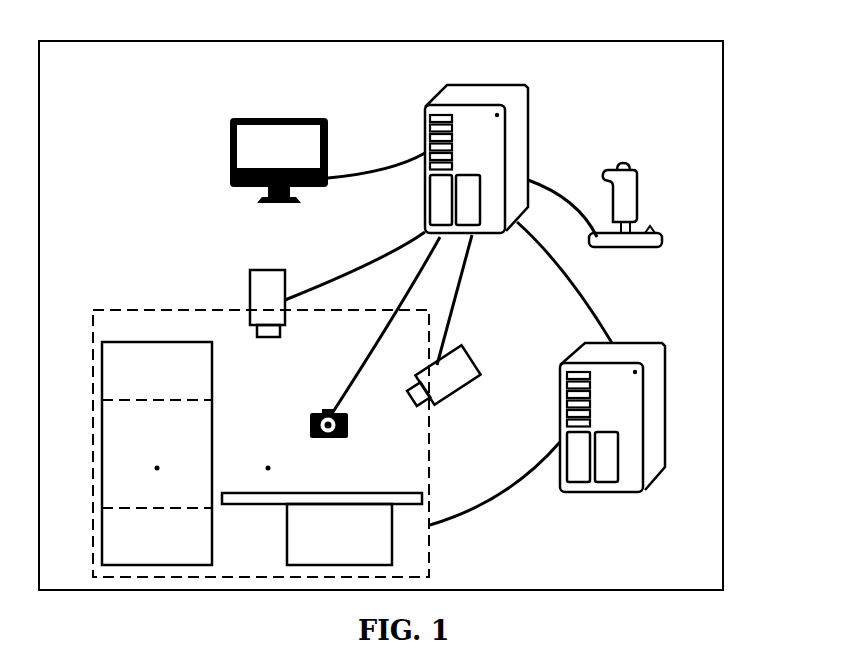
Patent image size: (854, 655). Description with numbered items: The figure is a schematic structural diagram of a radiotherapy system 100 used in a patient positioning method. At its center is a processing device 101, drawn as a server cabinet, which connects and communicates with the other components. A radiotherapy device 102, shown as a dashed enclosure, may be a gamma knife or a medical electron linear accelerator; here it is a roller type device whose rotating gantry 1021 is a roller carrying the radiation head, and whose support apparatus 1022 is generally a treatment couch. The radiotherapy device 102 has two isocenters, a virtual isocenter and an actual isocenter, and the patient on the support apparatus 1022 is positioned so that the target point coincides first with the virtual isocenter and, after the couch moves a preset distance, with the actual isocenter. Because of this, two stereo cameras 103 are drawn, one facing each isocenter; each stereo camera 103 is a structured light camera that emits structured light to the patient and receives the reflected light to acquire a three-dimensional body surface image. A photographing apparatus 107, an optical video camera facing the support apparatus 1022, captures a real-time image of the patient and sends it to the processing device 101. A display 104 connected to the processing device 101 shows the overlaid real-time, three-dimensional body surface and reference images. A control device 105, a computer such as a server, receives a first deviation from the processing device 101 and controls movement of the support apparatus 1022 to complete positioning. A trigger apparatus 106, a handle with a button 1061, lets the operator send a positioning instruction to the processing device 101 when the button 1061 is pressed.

The radiotherapy system 100 is at (723, 62).
The processing device 101 is at (530, 113).
The radiotherapy device 102 is at (261, 420).
The rotating gantry 1021 is at (109, 425).
The support apparatus 1022 is at (423, 498).
The stereo camera 103 is at (288, 285).
The display 104 is at (329, 137).
The control device 105 is at (668, 412).
The trigger apparatus 106 is at (638, 183).
The button 1061 is at (621, 166).
The photographing apparatus 107 is at (350, 422).